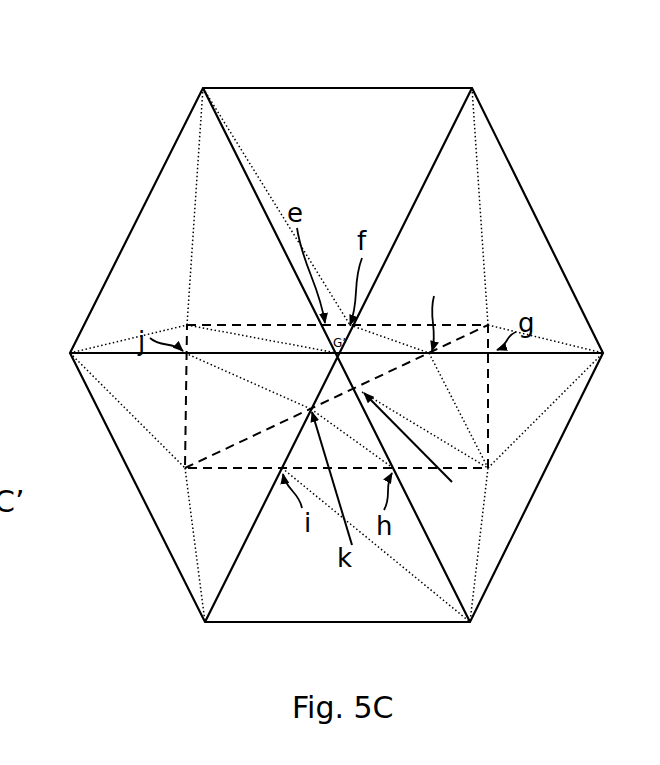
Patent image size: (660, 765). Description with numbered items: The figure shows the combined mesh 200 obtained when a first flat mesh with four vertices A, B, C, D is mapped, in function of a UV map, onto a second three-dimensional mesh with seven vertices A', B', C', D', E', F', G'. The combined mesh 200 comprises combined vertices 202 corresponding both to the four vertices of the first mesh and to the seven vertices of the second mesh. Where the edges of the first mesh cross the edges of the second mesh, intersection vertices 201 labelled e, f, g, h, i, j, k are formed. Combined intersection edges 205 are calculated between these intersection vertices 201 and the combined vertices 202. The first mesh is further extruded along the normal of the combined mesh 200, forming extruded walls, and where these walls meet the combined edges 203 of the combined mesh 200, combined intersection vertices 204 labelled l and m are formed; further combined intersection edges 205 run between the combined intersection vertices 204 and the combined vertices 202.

The combined mesh 200 is at (130, 150).
The intersection vertices 201 is at (360, 232).
The combined vertices 202 is at (200, 86).
The combined edges 203 is at (386, 158).
The combined intersection vertices 204 is at (438, 262).
The combined intersection edges 205 is at (462, 337).